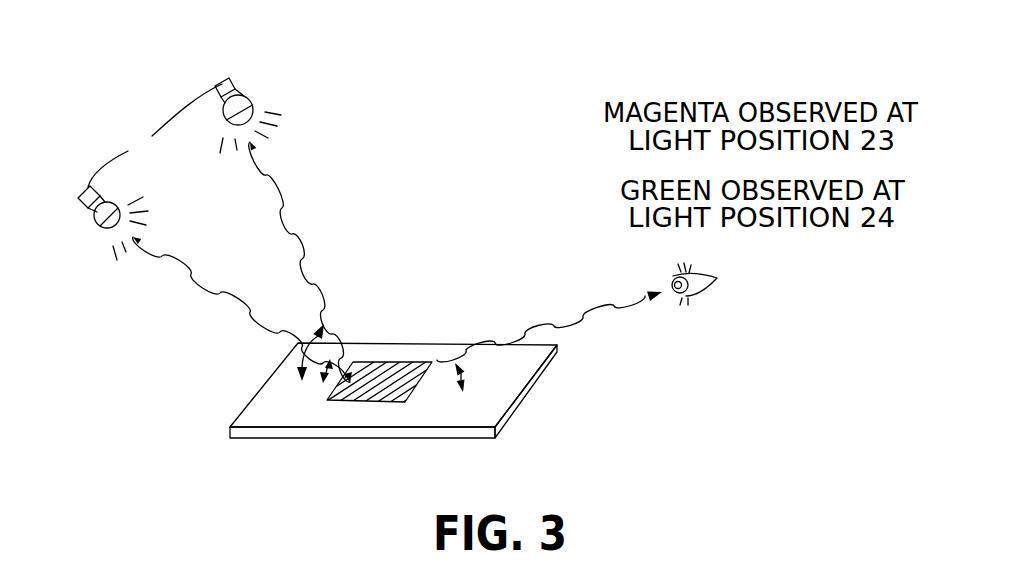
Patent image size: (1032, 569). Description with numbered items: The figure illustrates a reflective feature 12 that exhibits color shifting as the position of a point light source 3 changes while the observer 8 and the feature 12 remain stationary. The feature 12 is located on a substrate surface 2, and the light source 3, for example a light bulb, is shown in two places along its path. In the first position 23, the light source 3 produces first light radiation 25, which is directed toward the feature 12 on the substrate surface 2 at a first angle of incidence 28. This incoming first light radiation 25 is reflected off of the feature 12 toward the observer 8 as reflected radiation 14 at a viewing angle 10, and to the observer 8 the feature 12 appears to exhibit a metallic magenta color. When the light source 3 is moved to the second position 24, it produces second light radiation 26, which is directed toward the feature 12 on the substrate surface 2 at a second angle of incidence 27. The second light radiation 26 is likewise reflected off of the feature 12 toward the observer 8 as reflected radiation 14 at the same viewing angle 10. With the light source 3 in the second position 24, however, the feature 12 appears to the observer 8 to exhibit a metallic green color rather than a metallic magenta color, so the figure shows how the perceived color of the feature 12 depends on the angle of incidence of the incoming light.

The substrate surface 2 is at (270, 413).
The light source 3 is at (155, 135).
The observer 8 is at (722, 315).
The viewing angle 10 is at (462, 374).
The feature 12 is at (395, 360).
The reflected radiation 14 is at (584, 318).
The first position 23 is at (54, 204).
The second position 24 is at (296, 89).
The first light radiation 25 is at (204, 292).
The second light radiation 26 is at (282, 208).
The second angle of incidence 27 is at (303, 352).
The first angle of incidence 28 is at (322, 370).